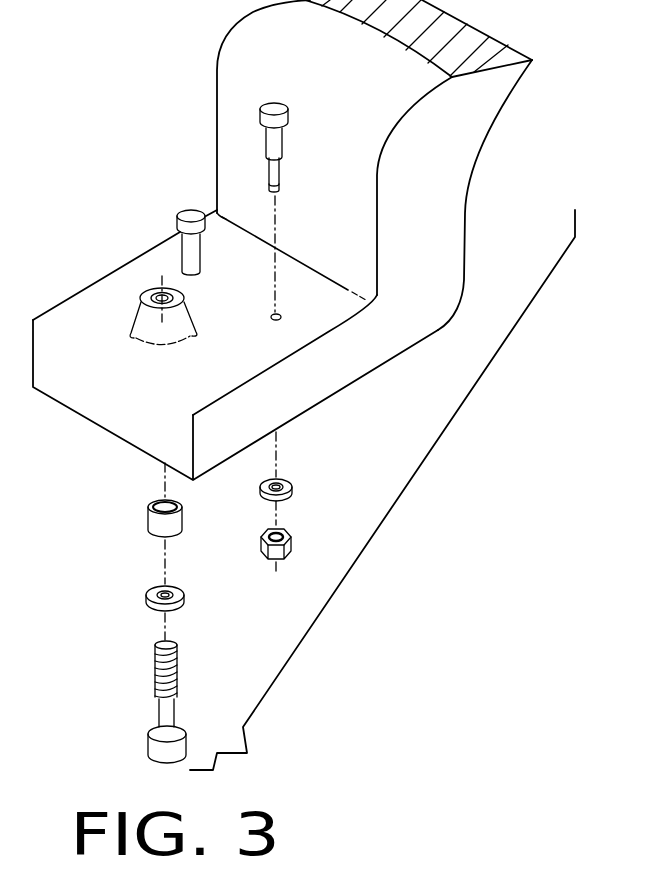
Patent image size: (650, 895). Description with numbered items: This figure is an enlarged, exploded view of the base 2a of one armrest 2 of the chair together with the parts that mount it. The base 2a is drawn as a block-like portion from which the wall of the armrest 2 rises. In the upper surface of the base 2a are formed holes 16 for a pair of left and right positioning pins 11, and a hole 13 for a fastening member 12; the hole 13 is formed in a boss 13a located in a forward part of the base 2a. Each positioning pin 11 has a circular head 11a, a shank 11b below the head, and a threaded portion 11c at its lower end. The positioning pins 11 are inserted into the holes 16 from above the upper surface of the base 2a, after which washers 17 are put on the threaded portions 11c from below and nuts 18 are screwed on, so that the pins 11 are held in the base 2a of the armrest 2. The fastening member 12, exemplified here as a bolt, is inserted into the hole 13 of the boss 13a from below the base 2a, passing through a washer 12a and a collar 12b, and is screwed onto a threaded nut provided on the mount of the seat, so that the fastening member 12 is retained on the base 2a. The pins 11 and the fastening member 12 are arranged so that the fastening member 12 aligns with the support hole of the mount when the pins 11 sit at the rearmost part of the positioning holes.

The armrest 2 is at (440, 177).
The base 2a is at (343, 390).
The positioning pin 11 is at (243, 164).
The circular head 11a is at (273, 105).
The shank of positioning pin 11b is at (283, 142).
The threaded portion 11c is at (280, 190).
The fastening member 12 is at (177, 707).
The washer 12a is at (148, 596).
The collar 12b is at (148, 518).
The hole 13 is at (140, 303).
The boss 13a is at (168, 325).
The hole 16 is at (271, 317).
The washer 17 is at (293, 487).
The nut 18 is at (293, 542).